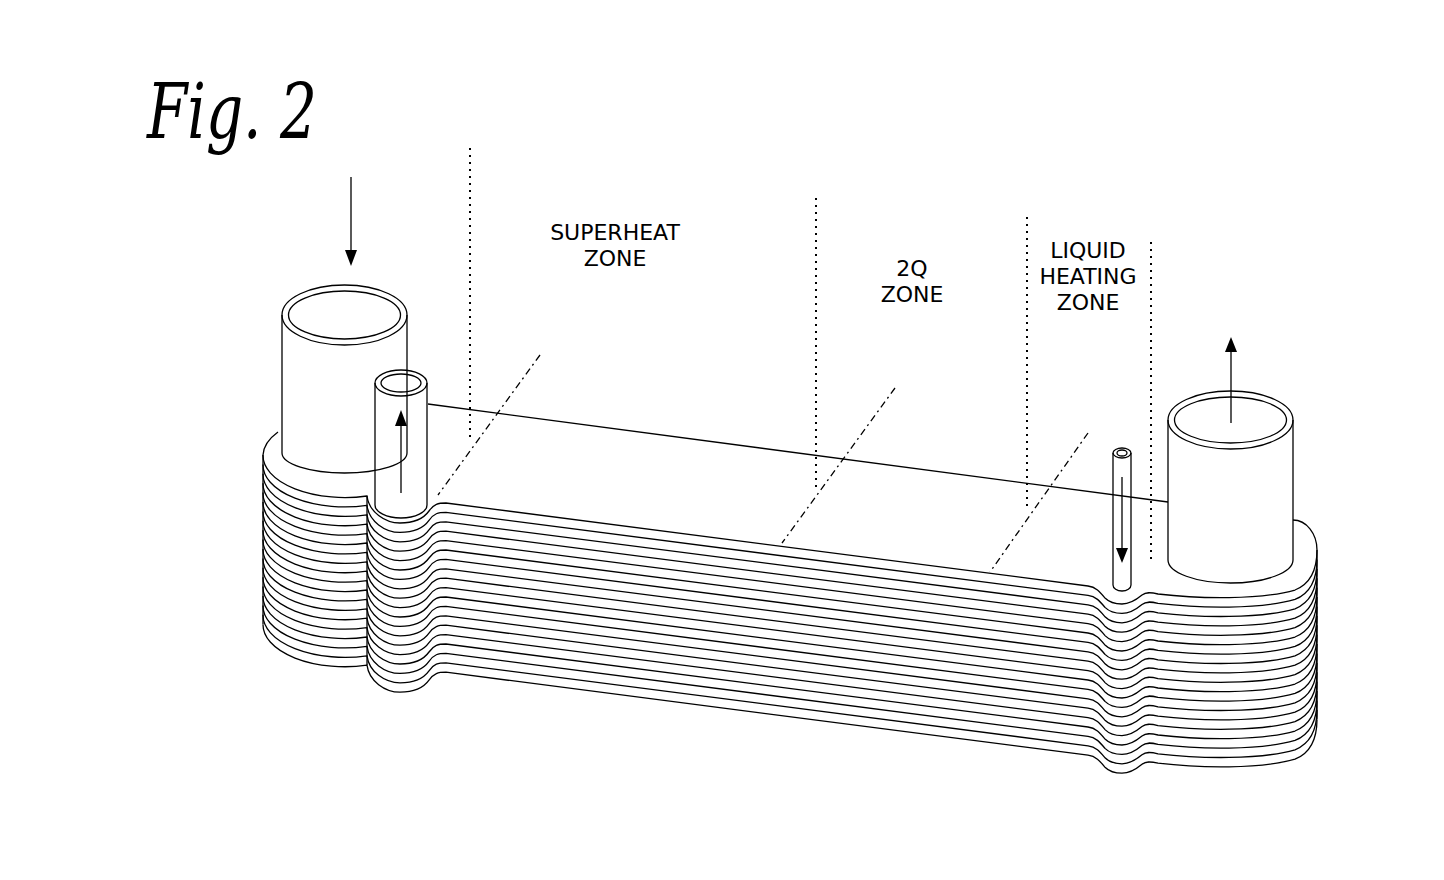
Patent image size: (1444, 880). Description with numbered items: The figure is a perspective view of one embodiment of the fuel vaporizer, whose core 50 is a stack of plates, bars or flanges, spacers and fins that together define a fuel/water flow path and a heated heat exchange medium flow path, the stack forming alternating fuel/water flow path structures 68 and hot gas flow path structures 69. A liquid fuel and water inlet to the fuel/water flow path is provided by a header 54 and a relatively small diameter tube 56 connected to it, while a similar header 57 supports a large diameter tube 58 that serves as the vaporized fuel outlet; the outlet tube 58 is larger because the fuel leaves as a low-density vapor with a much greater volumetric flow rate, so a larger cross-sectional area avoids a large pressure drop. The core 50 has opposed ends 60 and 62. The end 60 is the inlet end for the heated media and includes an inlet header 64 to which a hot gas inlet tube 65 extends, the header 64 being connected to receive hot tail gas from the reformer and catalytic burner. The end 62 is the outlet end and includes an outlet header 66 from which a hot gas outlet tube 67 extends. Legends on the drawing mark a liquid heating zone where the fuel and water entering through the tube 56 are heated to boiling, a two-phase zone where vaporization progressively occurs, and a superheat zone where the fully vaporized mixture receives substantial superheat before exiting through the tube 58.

The core 50 is at (727, 393).
The header 54 is at (1100, 741).
The tube 56 is at (1116, 448).
The header 57 is at (362, 655).
The tube 58 is at (410, 383).
The end 60 is at (263, 555).
The end 62 is at (1318, 672).
The inlet header 64 is at (265, 455).
The hot gas inlet tube 65 is at (368, 283).
The outlet header 66 is at (1318, 585).
The hot gas outlet tube 67 is at (1288, 405).
The fuel/water flow path structures 68 is at (608, 557).
The hot gas flow path structures 69 is at (467, 537).